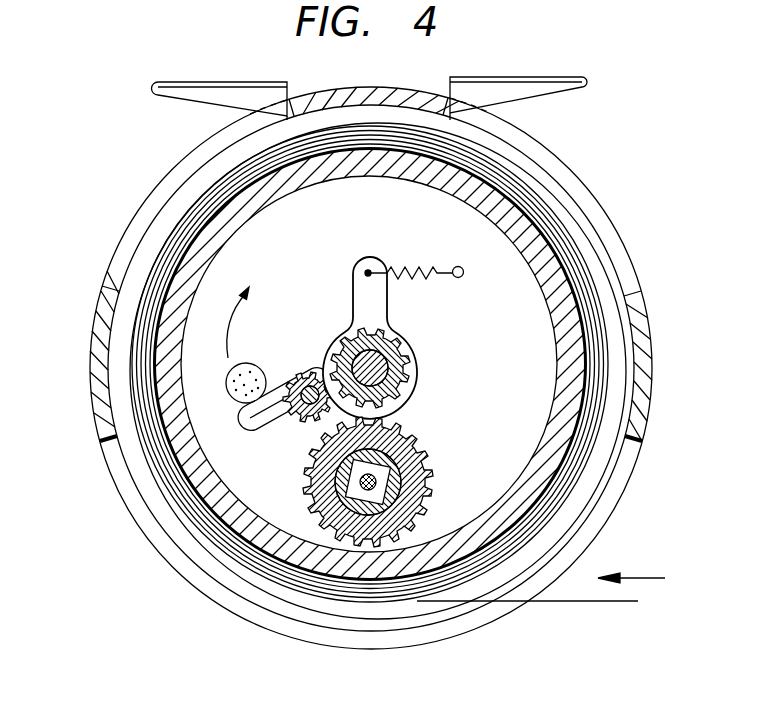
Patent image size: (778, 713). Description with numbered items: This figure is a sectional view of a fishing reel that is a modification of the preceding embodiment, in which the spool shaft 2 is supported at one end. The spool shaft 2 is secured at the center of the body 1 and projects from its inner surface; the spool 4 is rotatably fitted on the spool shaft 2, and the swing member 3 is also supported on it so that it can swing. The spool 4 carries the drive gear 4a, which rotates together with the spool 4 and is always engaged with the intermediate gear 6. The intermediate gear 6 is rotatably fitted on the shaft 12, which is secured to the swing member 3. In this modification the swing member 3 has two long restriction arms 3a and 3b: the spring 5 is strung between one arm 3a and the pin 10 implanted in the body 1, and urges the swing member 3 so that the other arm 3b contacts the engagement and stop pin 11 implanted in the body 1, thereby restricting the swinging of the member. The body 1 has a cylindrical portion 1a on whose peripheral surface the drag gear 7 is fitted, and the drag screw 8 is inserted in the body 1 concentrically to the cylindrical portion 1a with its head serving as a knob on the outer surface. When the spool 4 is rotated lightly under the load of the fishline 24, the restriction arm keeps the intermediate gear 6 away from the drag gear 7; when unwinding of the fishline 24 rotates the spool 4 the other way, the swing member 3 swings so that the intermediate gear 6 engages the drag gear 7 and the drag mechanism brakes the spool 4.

The body 1 is at (172, 162).
The cylindrical portion 1a is at (400, 472).
The spool shaft 2 is at (376, 367).
The swing member 3 is at (415, 355).
The long restriction arm 3a is at (380, 261).
The long restriction arm 3b is at (240, 422).
The spool 4 is at (150, 225).
The drive gear 4a is at (415, 340).
The spring 5 is at (438, 262).
The intermediate gear 6 is at (313, 412).
The drag gear 7 is at (435, 462).
The drag screw 8 is at (393, 488).
The pin 10 is at (464, 271).
The engagement and stop pin 11 is at (246, 383).
The shaft 12 is at (255, 421).
The fishline 24 is at (615, 602).